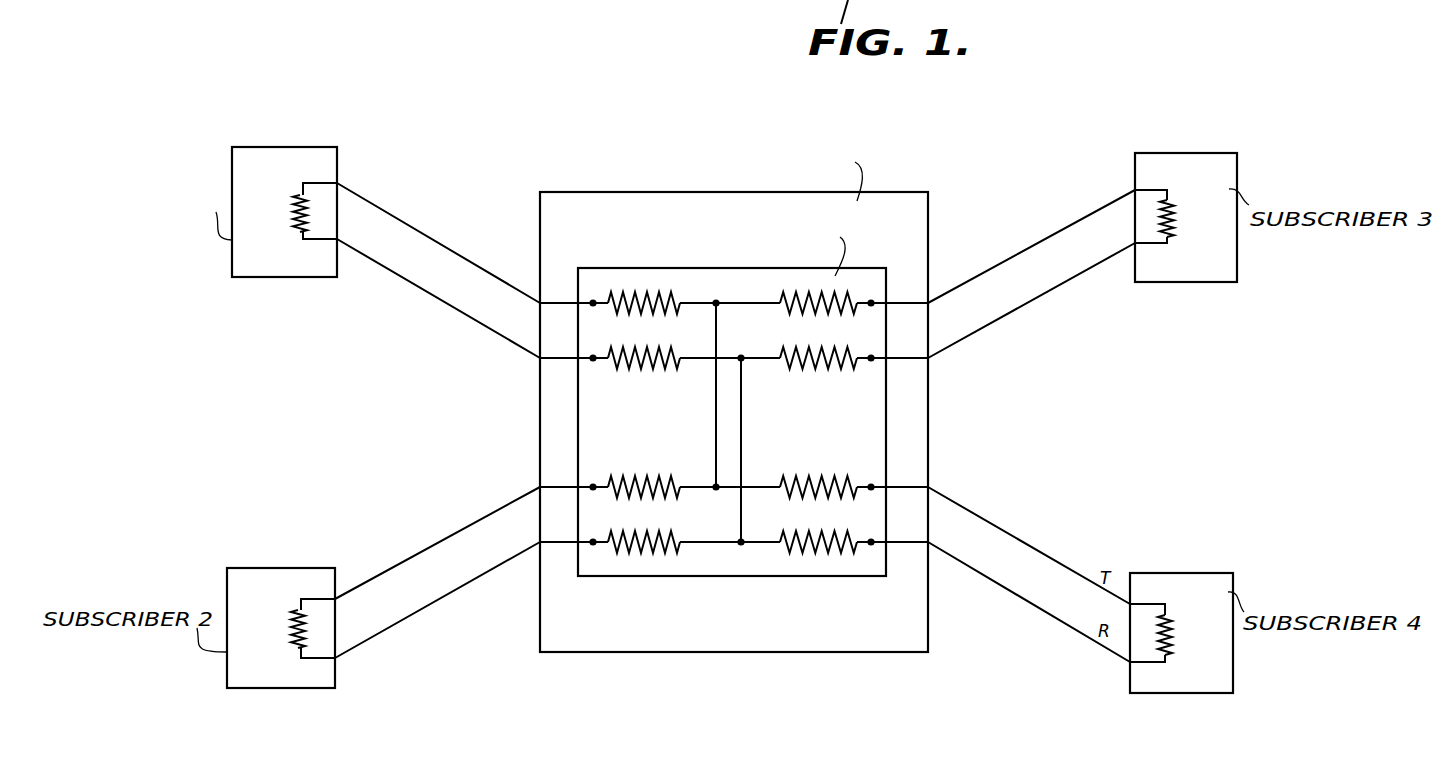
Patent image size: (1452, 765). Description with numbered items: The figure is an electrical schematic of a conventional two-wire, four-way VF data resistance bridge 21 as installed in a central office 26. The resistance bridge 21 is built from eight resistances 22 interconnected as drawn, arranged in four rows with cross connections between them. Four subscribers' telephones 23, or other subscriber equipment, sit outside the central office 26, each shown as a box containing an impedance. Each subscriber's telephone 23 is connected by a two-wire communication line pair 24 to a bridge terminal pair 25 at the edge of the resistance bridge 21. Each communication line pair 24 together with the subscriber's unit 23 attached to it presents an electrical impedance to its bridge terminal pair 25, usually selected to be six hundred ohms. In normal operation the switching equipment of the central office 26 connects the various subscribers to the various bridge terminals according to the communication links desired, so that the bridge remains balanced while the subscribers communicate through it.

The resistance bridge 21 is at (872, 414).
The resistance 22 is at (830, 560).
The subscriber's telephone 23 is at (263, 265).
The communication line pair 24 is at (368, 622).
The bridge terminal pair 25 is at (565, 515).
The central office 26 is at (814, 645).